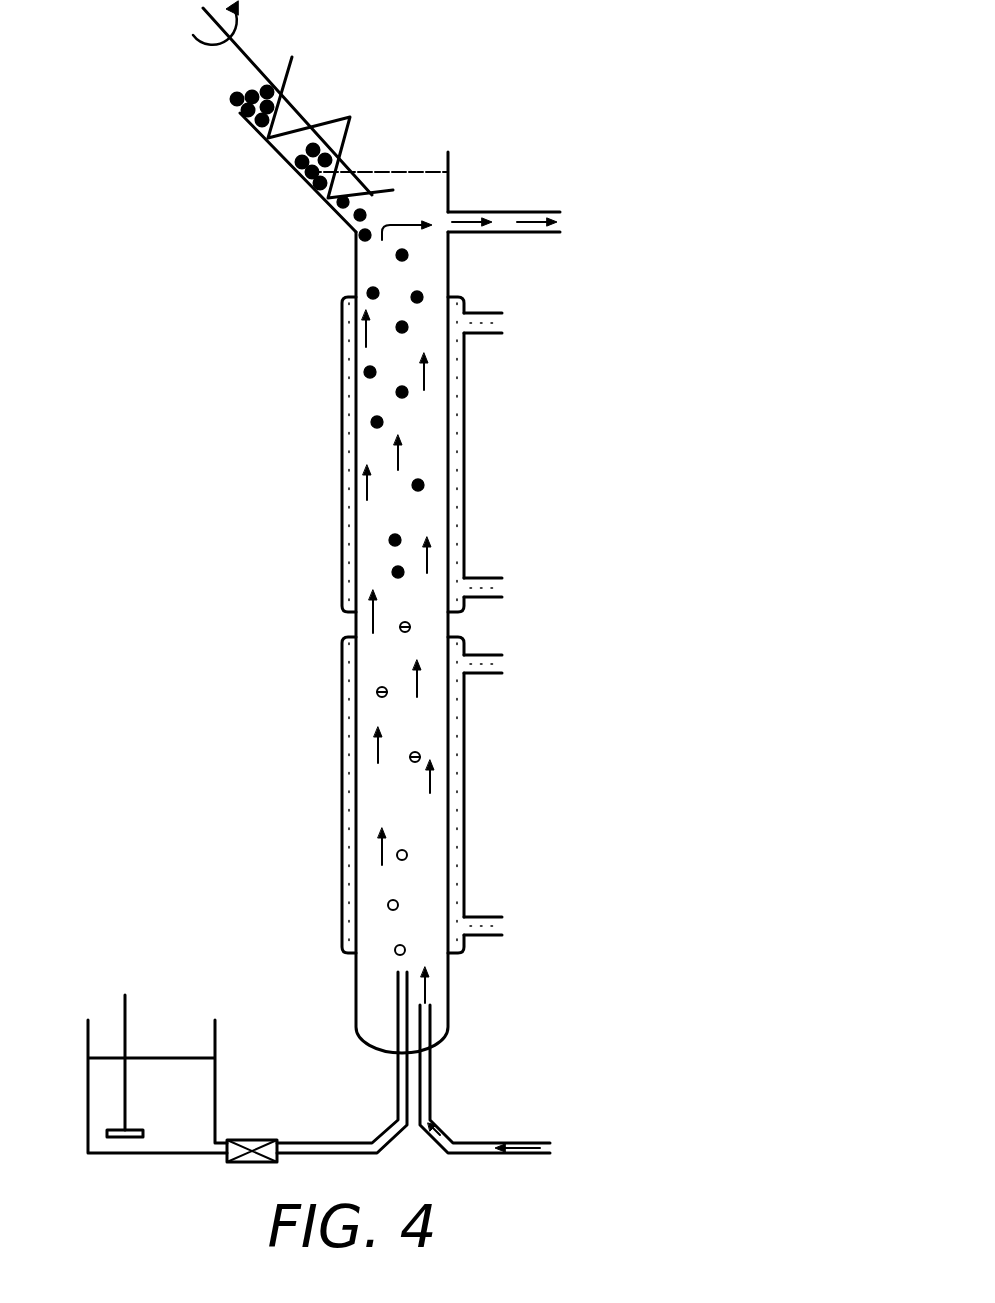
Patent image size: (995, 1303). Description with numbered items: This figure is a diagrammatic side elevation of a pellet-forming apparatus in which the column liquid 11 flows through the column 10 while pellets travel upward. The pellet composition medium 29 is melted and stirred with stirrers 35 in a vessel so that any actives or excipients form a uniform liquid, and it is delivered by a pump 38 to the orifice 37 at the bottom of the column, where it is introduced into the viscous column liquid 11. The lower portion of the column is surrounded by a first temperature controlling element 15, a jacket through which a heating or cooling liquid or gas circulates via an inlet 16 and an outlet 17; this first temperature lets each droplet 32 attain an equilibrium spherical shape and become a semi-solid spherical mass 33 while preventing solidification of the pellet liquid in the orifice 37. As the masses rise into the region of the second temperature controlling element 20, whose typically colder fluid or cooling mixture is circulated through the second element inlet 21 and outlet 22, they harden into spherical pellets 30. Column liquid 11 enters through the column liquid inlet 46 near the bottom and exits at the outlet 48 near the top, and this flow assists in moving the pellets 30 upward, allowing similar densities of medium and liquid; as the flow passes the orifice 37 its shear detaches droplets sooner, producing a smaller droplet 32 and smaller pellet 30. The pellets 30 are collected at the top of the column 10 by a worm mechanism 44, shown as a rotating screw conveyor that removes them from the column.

The column 10 is at (356, 270).
The column liquid 11 is at (430, 443).
The first temperature controlling element 15 is at (342, 777).
The inlet 16 is at (502, 925).
The outlet 17 is at (502, 662).
The second temperature controlling element 20 is at (342, 483).
The second element inlet 21 is at (502, 585).
The outlet 22 is at (502, 321).
The pellet composition medium 29 is at (123, 1085).
The spherical pellets 30 is at (396, 392).
The droplet 32 is at (388, 905).
The semi-solid spherical mass 33 is at (378, 690).
The stirrers 35 is at (125, 1008).
The orifice 37 is at (393, 972).
The pump 38 is at (242, 1140).
The screw feeder 44 is at (287, 82).
The column liquid inlet 46 is at (550, 1148).
The outlet 48 is at (560, 222).